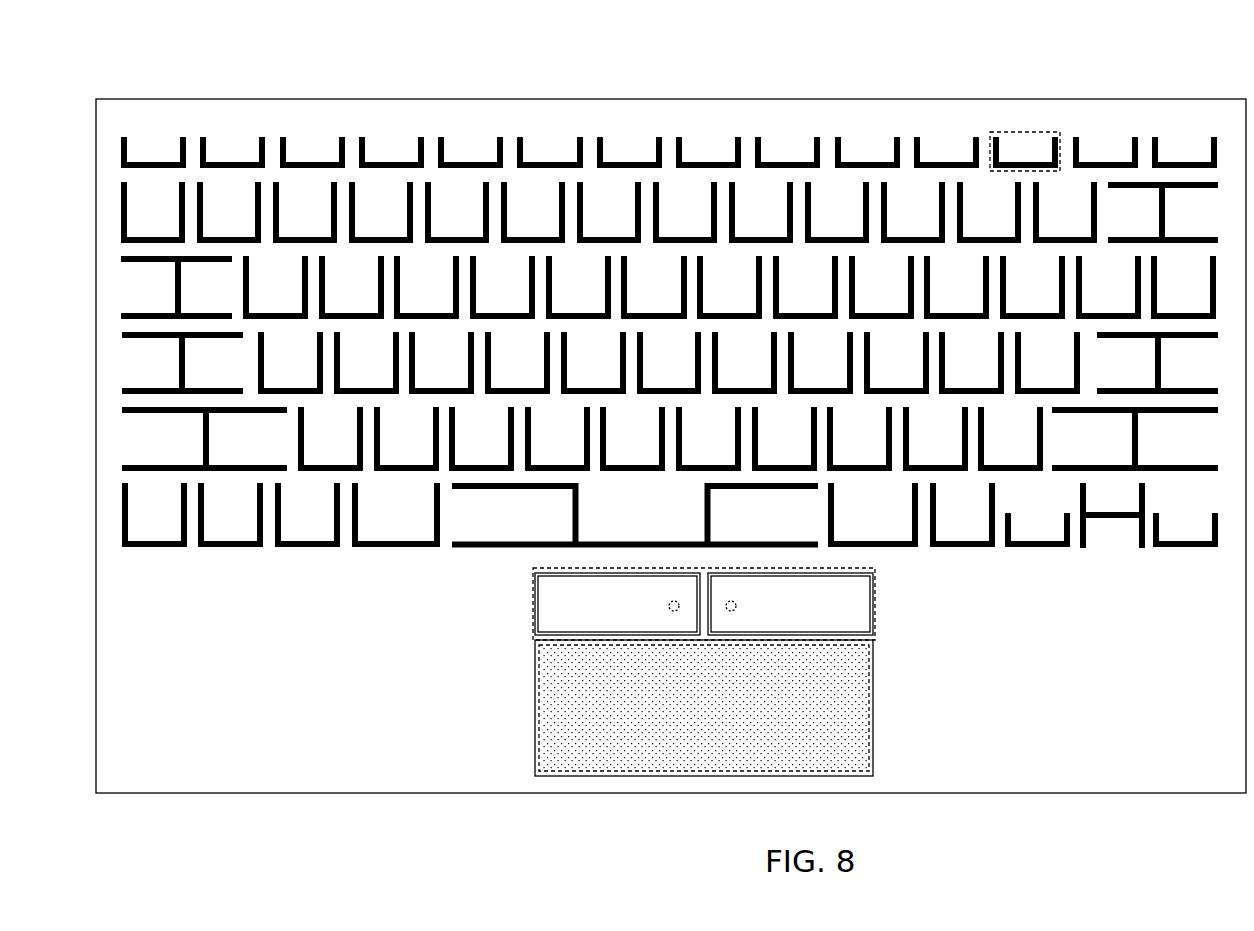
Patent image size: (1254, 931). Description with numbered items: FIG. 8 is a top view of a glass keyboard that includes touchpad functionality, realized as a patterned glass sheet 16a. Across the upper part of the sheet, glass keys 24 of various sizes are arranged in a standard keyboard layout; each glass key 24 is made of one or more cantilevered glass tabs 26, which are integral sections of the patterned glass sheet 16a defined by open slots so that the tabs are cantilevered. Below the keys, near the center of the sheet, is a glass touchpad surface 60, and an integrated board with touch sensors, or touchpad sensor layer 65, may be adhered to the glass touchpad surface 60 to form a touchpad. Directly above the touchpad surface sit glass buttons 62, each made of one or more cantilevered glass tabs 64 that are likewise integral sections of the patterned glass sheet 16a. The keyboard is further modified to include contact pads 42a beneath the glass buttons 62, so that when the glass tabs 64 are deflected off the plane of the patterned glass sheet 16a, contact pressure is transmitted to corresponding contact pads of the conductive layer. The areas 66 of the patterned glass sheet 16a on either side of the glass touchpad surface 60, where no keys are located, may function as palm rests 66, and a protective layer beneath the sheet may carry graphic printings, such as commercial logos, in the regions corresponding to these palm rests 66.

The patterned glass sheet 16a is at (516, 113).
The cantilevered glass tab 26 is at (785, 152).
The glass key 24 is at (1019, 132).
The glass button 62 is at (530, 613).
The cantilevered glass tab 64 is at (548, 593).
The contact pad 42a is at (737, 606).
The glass touchpad surface 60 is at (688, 773).
The touchpad sensor layer 65 is at (618, 763).
The palm rest area 66 is at (341, 675).